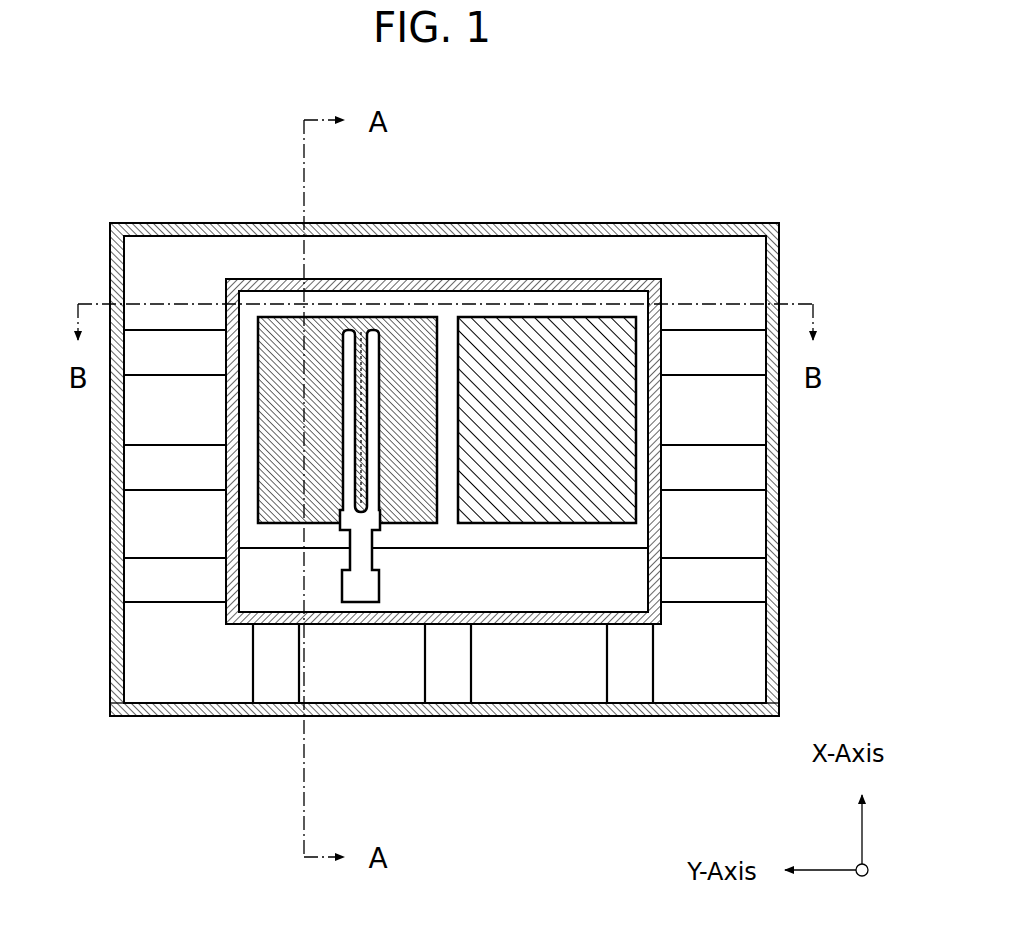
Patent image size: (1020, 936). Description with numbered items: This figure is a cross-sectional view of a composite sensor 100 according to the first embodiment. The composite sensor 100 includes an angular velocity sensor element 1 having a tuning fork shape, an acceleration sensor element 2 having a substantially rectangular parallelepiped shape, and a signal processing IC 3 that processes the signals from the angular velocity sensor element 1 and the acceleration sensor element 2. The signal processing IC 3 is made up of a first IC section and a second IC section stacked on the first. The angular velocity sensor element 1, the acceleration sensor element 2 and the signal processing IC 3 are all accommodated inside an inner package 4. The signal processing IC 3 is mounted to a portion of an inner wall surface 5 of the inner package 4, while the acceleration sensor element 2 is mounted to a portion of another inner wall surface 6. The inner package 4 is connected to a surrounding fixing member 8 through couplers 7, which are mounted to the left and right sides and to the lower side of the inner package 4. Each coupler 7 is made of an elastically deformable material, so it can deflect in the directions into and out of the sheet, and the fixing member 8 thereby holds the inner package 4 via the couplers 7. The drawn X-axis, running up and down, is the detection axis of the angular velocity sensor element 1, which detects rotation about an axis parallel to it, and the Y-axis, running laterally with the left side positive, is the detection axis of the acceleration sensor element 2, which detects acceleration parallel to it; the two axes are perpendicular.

The composite sensor 100 is at (747, 222).
The angular velocity sensor element 1 is at (360, 593).
The acceleration sensor element 2 is at (606, 338).
The signal processing IC 3 is at (405, 330).
The inner package 4 is at (533, 279).
The inner wall surface 5 is at (447, 330).
The inner wall surface 6 is at (556, 585).
The coupler 7 is at (158, 588).
The fixing member 8 is at (706, 716).